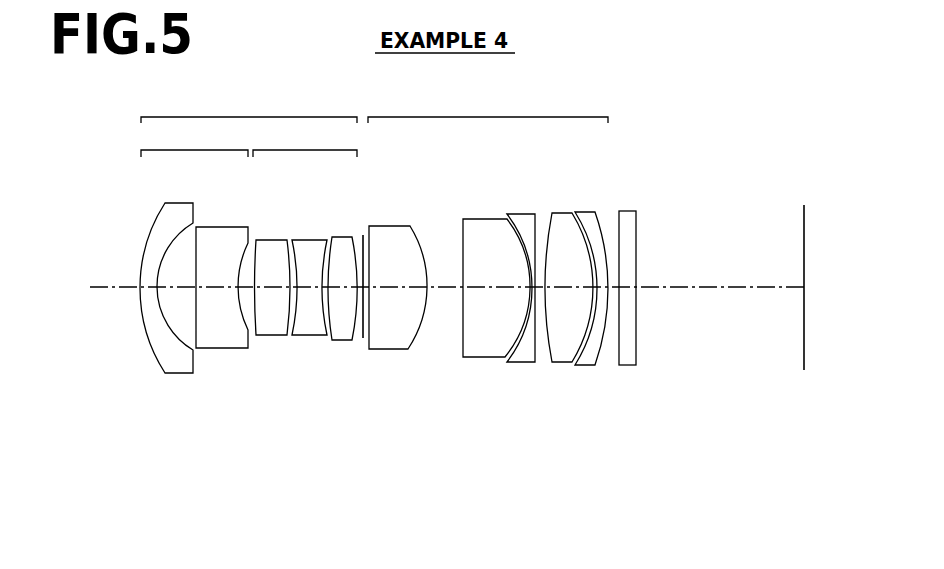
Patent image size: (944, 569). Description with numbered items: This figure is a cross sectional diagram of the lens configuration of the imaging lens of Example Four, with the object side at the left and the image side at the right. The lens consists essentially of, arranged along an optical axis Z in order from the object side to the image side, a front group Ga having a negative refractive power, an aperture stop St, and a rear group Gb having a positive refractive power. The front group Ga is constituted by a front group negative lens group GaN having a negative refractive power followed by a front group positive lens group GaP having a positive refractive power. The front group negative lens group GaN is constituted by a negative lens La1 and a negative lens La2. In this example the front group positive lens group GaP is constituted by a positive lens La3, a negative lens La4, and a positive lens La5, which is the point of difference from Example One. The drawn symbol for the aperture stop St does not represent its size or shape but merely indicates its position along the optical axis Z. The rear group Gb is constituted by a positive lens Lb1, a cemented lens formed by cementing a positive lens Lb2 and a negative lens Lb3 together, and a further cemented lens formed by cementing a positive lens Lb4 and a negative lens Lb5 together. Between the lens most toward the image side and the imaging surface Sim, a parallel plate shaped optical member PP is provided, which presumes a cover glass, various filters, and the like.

The optical axis Z is at (112, 285).
The front group Ga is at (249, 106).
The front group negative lens group GaN is at (194, 140).
The front group positive lens group GaP is at (305, 140).
The rear group Gb is at (488, 106).
The negative lens La1 is at (178, 373).
The negative lens La2 is at (225, 348).
The positive lens La3 is at (272, 335).
The negative lens La4 is at (310, 335).
The positive lens La5 is at (342, 340).
The aperture stop St is at (363, 338).
The positive lens Lb1 is at (387, 349).
The positive lens Lb2 is at (483, 357).
The negative lens Lb3 is at (522, 362).
The positive lens Lb4 is at (563, 362).
The negative lens Lb5 is at (592, 365).
The optical member PP is at (627, 365).
The imaging surface Sim is at (804, 370).